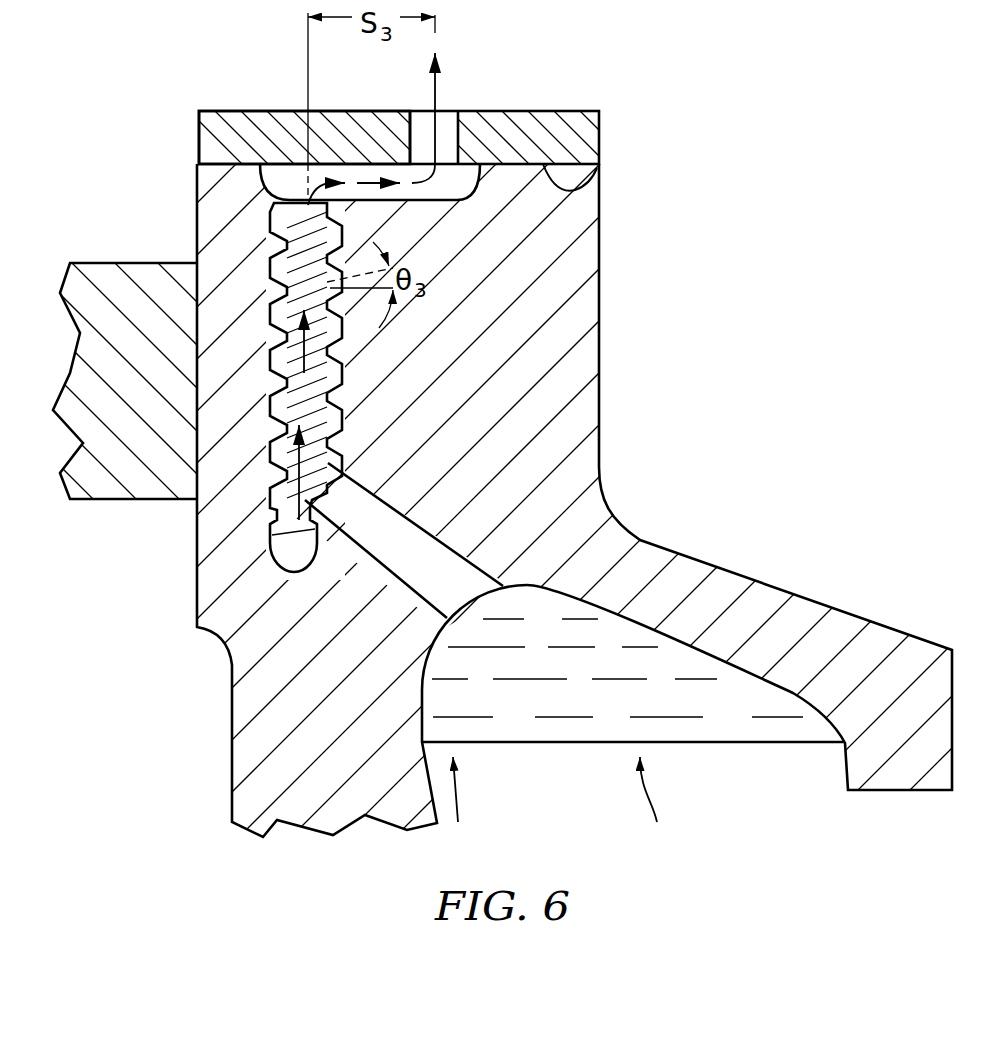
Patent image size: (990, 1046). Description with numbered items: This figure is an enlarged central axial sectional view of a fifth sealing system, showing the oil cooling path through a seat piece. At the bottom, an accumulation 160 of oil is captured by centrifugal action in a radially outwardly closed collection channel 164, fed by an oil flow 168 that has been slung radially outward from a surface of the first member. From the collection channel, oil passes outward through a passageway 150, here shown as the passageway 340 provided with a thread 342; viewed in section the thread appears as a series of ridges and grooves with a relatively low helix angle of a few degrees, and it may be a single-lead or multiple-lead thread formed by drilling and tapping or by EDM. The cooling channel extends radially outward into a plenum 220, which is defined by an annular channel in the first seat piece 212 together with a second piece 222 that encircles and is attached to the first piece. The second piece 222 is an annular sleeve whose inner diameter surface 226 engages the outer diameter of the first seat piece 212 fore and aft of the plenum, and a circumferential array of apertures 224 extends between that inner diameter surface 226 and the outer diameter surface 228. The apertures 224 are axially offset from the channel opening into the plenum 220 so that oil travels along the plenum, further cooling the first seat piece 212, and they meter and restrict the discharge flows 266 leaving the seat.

The passageway leg 150 is at (387, 556).
The accumulation of oil 160 is at (568, 708).
The collection channel 164 is at (660, 807).
The oil flow 168 is at (457, 797).
The first seat piece 212 is at (543, 283).
The plenum 220 is at (380, 166).
The second piece 222 is at (560, 120).
The aperture 224 is at (447, 132).
The inner diameter surface 226 is at (578, 188).
The outer diameter surface 228 is at (244, 111).
The discharge flow 266 is at (437, 85).
The passageway 340 is at (307, 396).
The thread 342 is at (330, 355).